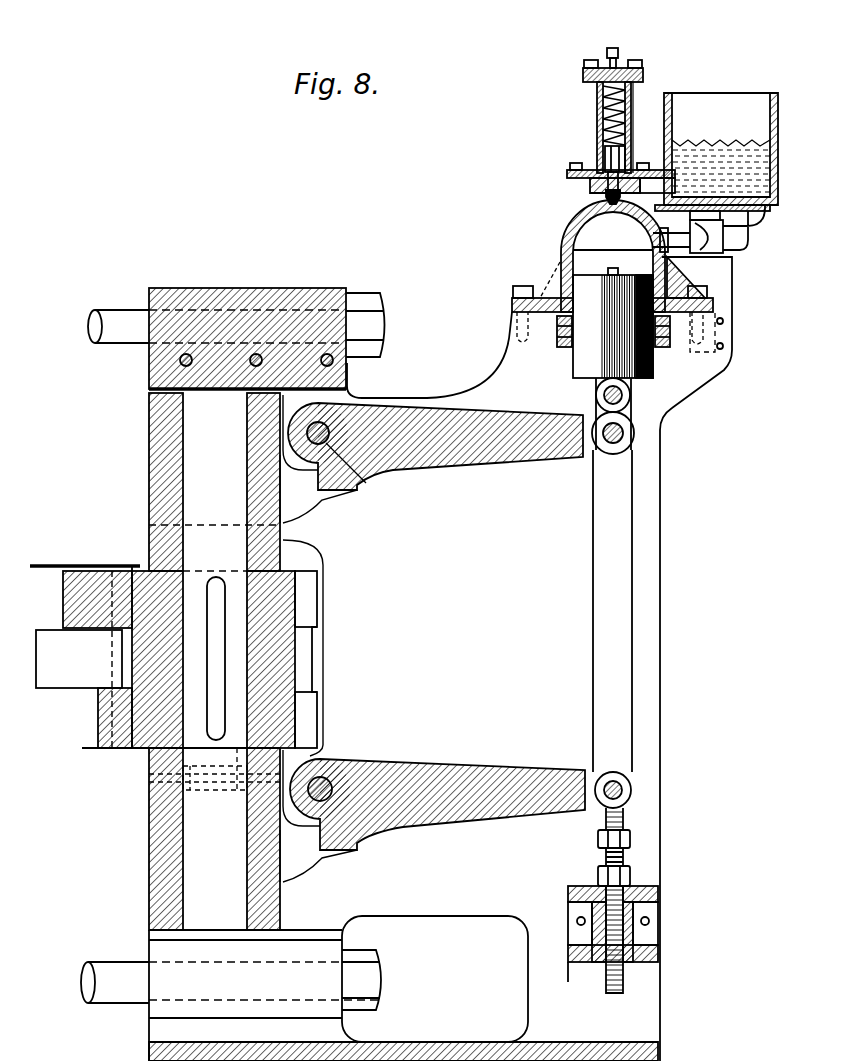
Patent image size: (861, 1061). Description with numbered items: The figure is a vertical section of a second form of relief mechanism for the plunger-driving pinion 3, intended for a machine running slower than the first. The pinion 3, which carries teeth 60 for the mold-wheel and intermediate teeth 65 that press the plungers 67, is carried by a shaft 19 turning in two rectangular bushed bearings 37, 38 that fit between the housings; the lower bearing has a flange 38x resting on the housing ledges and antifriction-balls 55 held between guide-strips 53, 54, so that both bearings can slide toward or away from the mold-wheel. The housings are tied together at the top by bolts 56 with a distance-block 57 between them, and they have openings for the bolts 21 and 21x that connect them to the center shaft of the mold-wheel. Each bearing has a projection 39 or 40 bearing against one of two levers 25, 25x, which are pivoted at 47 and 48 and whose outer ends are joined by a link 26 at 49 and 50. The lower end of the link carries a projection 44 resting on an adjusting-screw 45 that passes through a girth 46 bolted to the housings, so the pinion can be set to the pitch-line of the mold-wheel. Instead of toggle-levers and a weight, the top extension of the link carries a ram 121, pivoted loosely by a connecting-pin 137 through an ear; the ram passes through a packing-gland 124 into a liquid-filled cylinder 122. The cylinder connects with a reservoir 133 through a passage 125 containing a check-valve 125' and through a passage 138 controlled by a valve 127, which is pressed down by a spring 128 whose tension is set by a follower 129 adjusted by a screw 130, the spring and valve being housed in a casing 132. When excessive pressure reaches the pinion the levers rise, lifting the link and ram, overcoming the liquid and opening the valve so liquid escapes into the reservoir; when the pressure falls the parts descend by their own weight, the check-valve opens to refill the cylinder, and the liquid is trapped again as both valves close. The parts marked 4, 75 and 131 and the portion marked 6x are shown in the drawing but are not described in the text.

The pinion 3 is at (270, 638).
The guide piece 4 is at (70, 603).
The frame 6x is at (440, 659).
The shaft 19 is at (228, 658).
The bolt 21 is at (118, 314).
The bolt 21x is at (122, 978).
The lever 25 is at (470, 466).
The lever 25x is at (465, 818).
The link 26 is at (612, 611).
The bushed bearing 37 is at (149, 470).
The bushed bearing 38 is at (149, 866).
The flange 38x is at (214, 768).
The projection 39 is at (293, 512).
The projection 40 is at (290, 868).
The projection 44 is at (624, 822).
The adjusting-screw 45 is at (598, 858).
The girth 46 is at (648, 886).
The pivot 47 is at (366, 483).
The pivot 48 is at (330, 778).
The connection 49 is at (605, 440).
The connection 50 is at (632, 790).
The guide-strip 53 is at (233, 759).
The guide-strip 54 is at (190, 792).
The antifriction-balls 55 is at (225, 790).
The bolt 56 is at (350, 374).
The distance-block 57 is at (240, 288).
The teeth 60 is at (318, 600).
The teeth 65 is at (118, 660).
The plunger 67 is at (79, 659).
The lower guide piece 75 is at (124, 750).
The ram 121 is at (613, 323).
The cylinder 122 is at (566, 220).
The packing-gland 124 is at (560, 340).
The passage 125 is at (663, 236).
The check-valve 125' is at (758, 237).
The valve 127 is at (604, 160).
The spring 128 is at (597, 122).
The follower 129 is at (597, 95).
The screw 130 is at (613, 46).
The top flange 131 is at (643, 68).
The casing 132 is at (631, 108).
The reservoir 133 is at (716, 156).
The connecting-pin 137 is at (630, 395).
The passage 138 is at (648, 170).